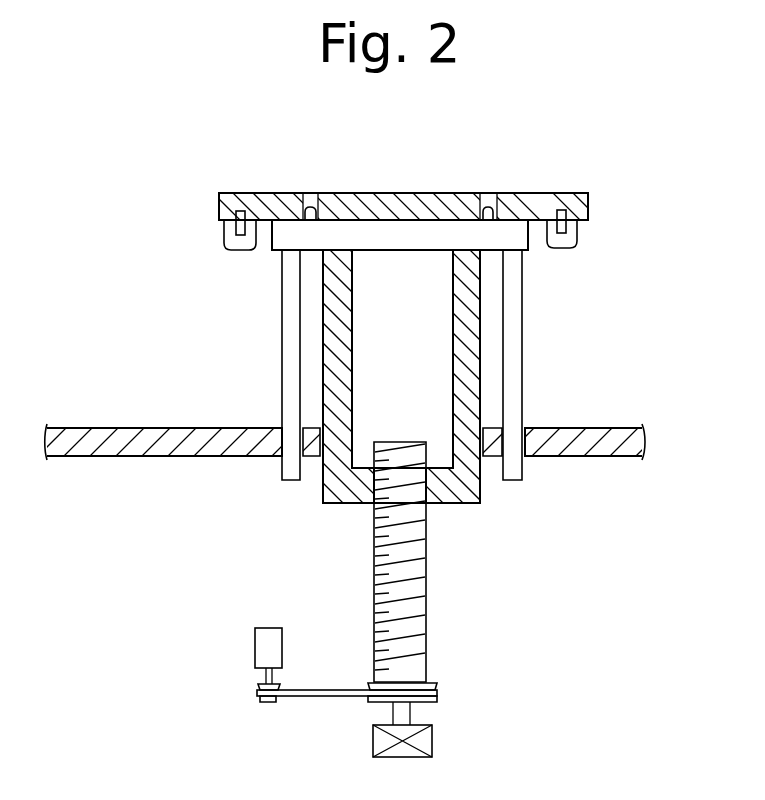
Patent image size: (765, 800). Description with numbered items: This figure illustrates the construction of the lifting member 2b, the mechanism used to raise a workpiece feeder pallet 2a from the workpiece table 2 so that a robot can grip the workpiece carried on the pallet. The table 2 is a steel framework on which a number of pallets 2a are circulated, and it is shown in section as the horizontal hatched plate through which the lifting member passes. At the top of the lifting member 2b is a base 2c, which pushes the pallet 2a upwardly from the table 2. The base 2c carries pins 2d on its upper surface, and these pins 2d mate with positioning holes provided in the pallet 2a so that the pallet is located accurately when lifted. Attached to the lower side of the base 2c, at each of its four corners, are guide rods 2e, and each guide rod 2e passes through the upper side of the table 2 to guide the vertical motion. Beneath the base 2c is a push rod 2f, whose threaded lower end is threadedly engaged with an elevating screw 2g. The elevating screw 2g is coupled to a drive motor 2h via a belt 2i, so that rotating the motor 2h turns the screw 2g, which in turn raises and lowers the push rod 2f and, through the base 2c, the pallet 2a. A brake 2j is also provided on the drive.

The workpiece table 2 is at (605, 428).
The workpiece feeder pallet 2a is at (548, 196).
The lifting member 2b is at (136, 283).
The base 2c is at (414, 236).
The pins 2d is at (317, 207).
The guide rods 2e is at (285, 355).
The push rod 2f is at (330, 292).
The elevating screw 2g is at (413, 585).
The drive motor 2h is at (265, 647).
The belt 2i is at (320, 697).
The brake 2j is at (423, 745).